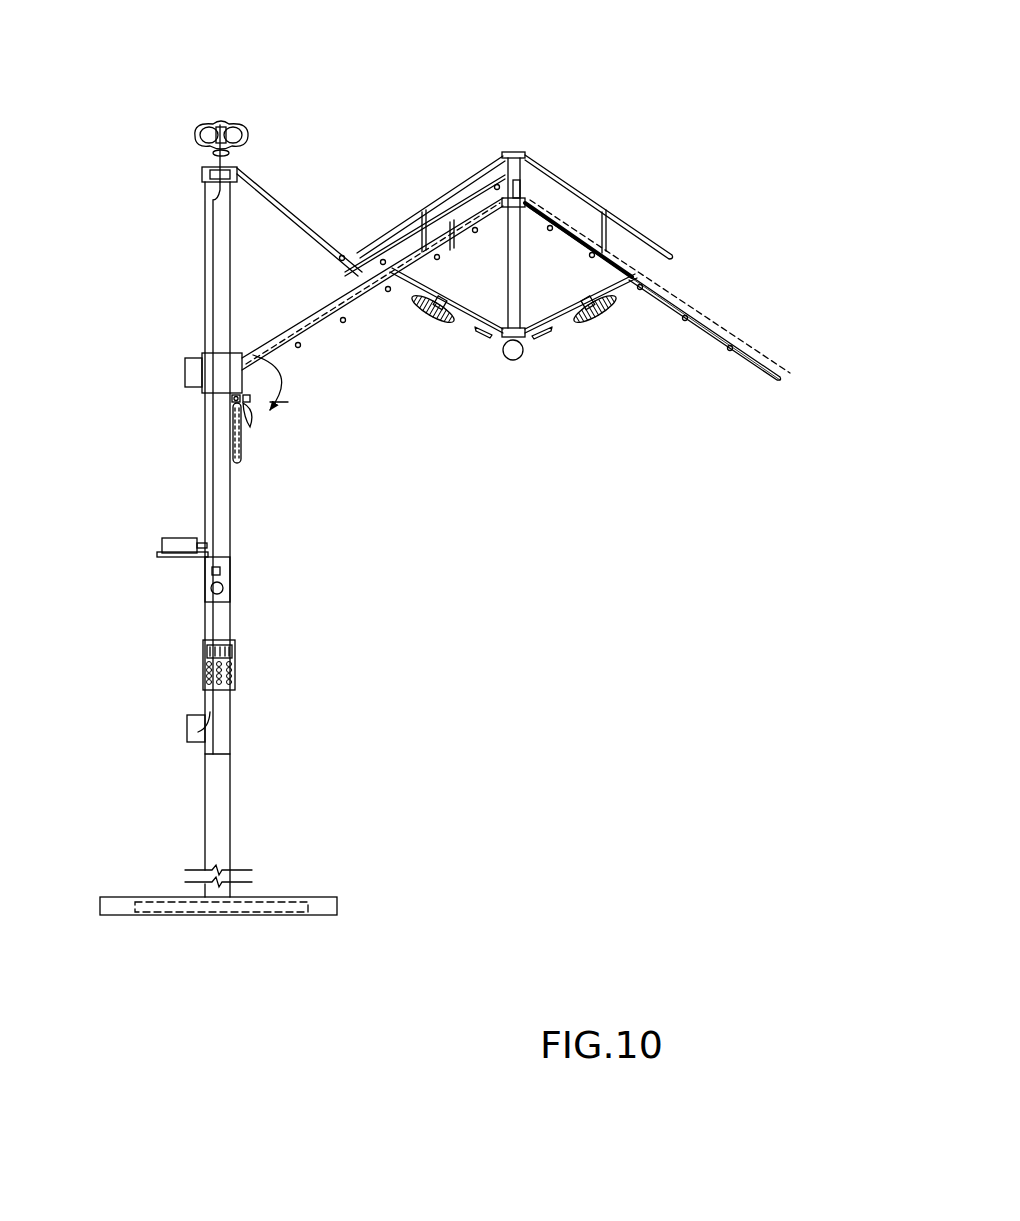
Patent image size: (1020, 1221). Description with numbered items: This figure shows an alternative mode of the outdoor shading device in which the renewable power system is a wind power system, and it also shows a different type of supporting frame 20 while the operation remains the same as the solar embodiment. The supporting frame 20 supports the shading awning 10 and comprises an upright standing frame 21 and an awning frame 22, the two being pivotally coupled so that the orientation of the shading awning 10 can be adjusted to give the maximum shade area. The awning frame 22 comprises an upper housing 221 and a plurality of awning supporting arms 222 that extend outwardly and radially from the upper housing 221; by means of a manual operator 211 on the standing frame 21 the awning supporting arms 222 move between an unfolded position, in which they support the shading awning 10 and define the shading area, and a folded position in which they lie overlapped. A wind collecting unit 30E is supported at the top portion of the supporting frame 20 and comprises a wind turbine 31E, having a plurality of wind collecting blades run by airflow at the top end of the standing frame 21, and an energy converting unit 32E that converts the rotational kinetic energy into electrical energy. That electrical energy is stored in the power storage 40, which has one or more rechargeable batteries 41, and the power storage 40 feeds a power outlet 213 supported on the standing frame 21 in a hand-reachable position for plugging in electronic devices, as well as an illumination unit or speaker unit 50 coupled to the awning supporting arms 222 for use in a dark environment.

The shading awning 10 is at (688, 307).
The supporting frame 20 is at (217, 539).
The standing frame 21 is at (218, 492).
The manual operator 211 is at (242, 437).
The power outlet 213 is at (190, 747).
The awning frame 22 is at (560, 233).
The upper housing 221 is at (513, 200).
The awning supporting arms 222 is at (757, 357).
The wind collecting unit 30E is at (319, 95).
The wind turbine 31E is at (222, 112).
The energy converting unit 32E is at (235, 168).
The power storage 40 is at (238, 965).
The rechargeable batteries 41 is at (222, 903).
The illumination unit or speaker unit 50 is at (680, 325).